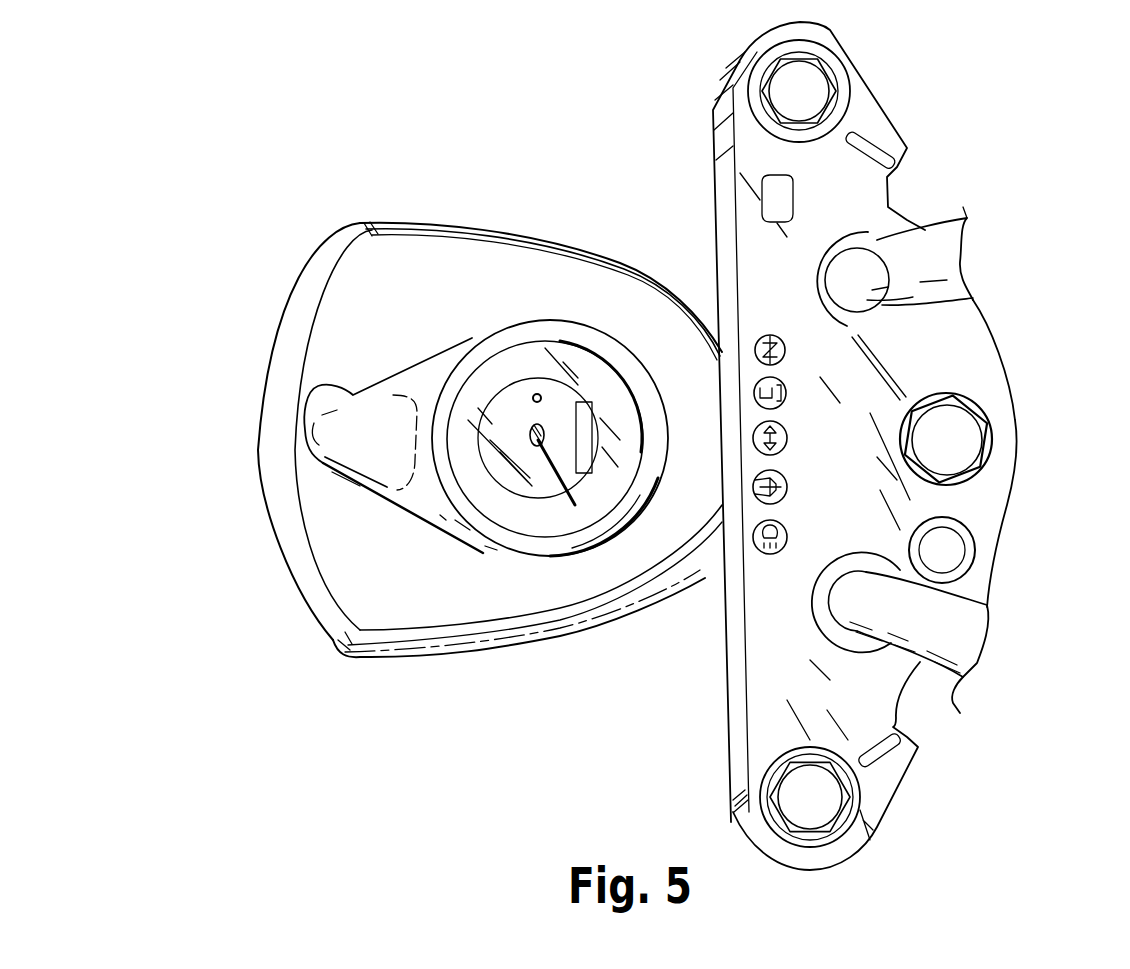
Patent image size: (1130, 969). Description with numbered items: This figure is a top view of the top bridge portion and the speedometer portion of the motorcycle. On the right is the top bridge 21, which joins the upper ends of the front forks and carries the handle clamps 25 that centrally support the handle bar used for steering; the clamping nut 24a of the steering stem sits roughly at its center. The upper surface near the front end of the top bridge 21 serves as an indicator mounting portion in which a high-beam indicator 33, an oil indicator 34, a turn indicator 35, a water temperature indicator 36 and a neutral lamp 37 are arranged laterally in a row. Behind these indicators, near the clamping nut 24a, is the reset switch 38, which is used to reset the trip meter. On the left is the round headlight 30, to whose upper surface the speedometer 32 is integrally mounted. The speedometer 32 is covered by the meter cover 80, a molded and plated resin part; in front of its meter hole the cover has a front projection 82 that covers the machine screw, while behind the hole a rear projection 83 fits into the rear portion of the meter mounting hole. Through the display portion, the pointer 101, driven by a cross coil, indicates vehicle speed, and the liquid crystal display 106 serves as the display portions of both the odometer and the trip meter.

The top bridge 21 is at (718, 95).
The clamping nut 24a is at (972, 433).
The handle clamps 25 is at (963, 207).
The headlight 30 is at (268, 328).
The speedometer 32 is at (527, 350).
The high-beam indicator 33 is at (770, 556).
The oil indicator 34 is at (757, 492).
The turn indicator 35 is at (752, 438).
The water temperature indicator 36 is at (756, 380).
The neutral lamp 37 is at (757, 338).
The reset switch 38 is at (948, 545).
The meter cover 80 is at (352, 484).
The front projection 82 is at (353, 395).
The rear projection 83 is at (638, 378).
The pointer 101 is at (555, 490).
The liquid crystal display 106 is at (584, 474).